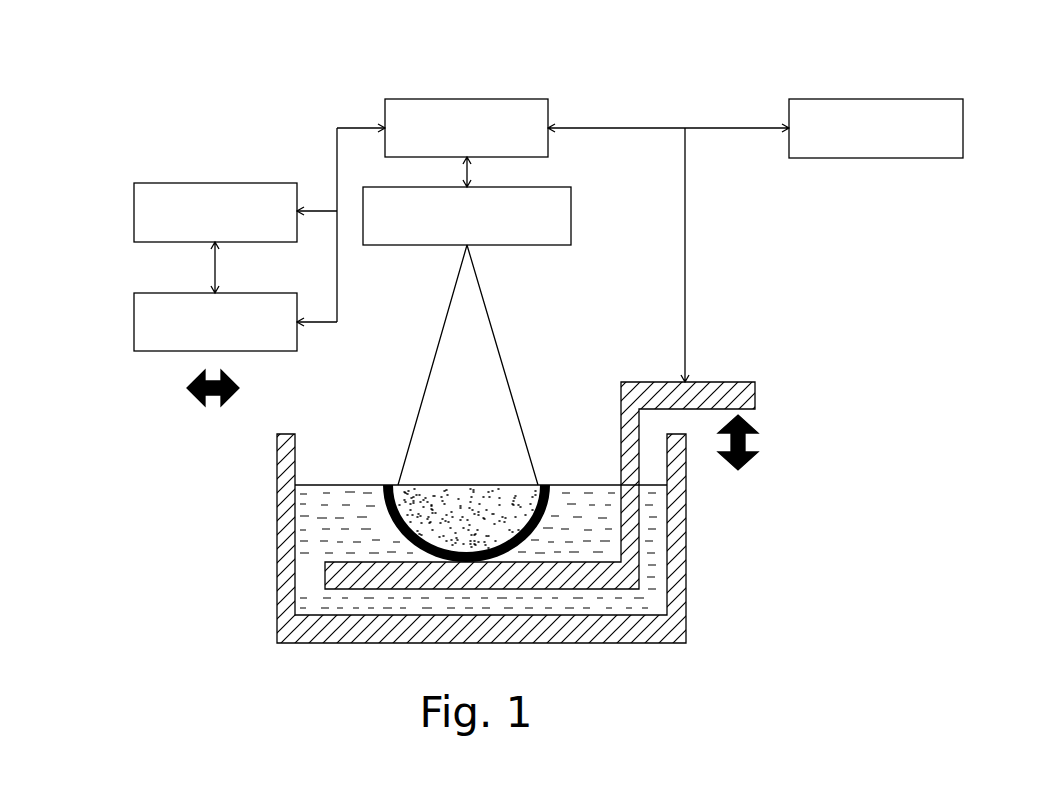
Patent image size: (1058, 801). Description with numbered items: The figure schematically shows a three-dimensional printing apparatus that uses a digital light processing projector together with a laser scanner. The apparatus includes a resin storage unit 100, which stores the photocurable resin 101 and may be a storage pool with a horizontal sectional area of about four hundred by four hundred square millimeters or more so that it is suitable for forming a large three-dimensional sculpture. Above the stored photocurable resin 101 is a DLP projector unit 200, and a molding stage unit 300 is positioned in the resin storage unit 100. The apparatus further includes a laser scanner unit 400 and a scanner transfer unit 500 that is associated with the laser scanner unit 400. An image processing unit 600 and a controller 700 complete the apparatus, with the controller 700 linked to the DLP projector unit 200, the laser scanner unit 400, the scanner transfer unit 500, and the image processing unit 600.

The resin storage unit 100 is at (686, 578).
The photocurable resin 101 is at (331, 485).
The DLP projector unit 200 is at (571, 216).
The molding stage unit 300 is at (660, 522).
The laser scanner unit 400 is at (134, 319).
The scanner transfer unit 500 is at (134, 209).
The image processing unit 600 is at (872, 99).
The controller 700 is at (480, 99).